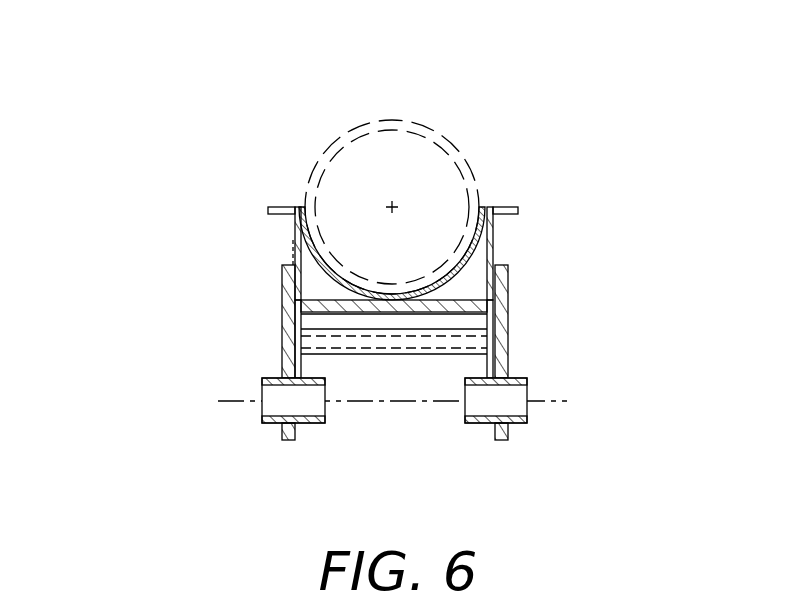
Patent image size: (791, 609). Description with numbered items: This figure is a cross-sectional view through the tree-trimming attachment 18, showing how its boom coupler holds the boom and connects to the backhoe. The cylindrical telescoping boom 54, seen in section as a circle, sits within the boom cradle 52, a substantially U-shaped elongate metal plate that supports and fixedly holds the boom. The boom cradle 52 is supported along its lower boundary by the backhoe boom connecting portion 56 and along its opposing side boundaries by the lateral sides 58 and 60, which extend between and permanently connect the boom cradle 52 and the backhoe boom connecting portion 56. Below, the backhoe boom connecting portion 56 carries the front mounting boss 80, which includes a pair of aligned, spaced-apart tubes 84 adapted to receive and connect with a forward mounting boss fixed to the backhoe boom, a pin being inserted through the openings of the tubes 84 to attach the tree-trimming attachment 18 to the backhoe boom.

The tree-trimming attachment 18 is at (571, 129).
The boom cradle 52 is at (477, 255).
The telescoping boom 54 is at (328, 150).
The backhoe boom connecting portion 56 is at (488, 318).
The lateral side 58 is at (297, 246).
The lateral side 60 is at (488, 241).
The front mounting boss 80 is at (180, 386).
The tubes 84 is at (318, 423).